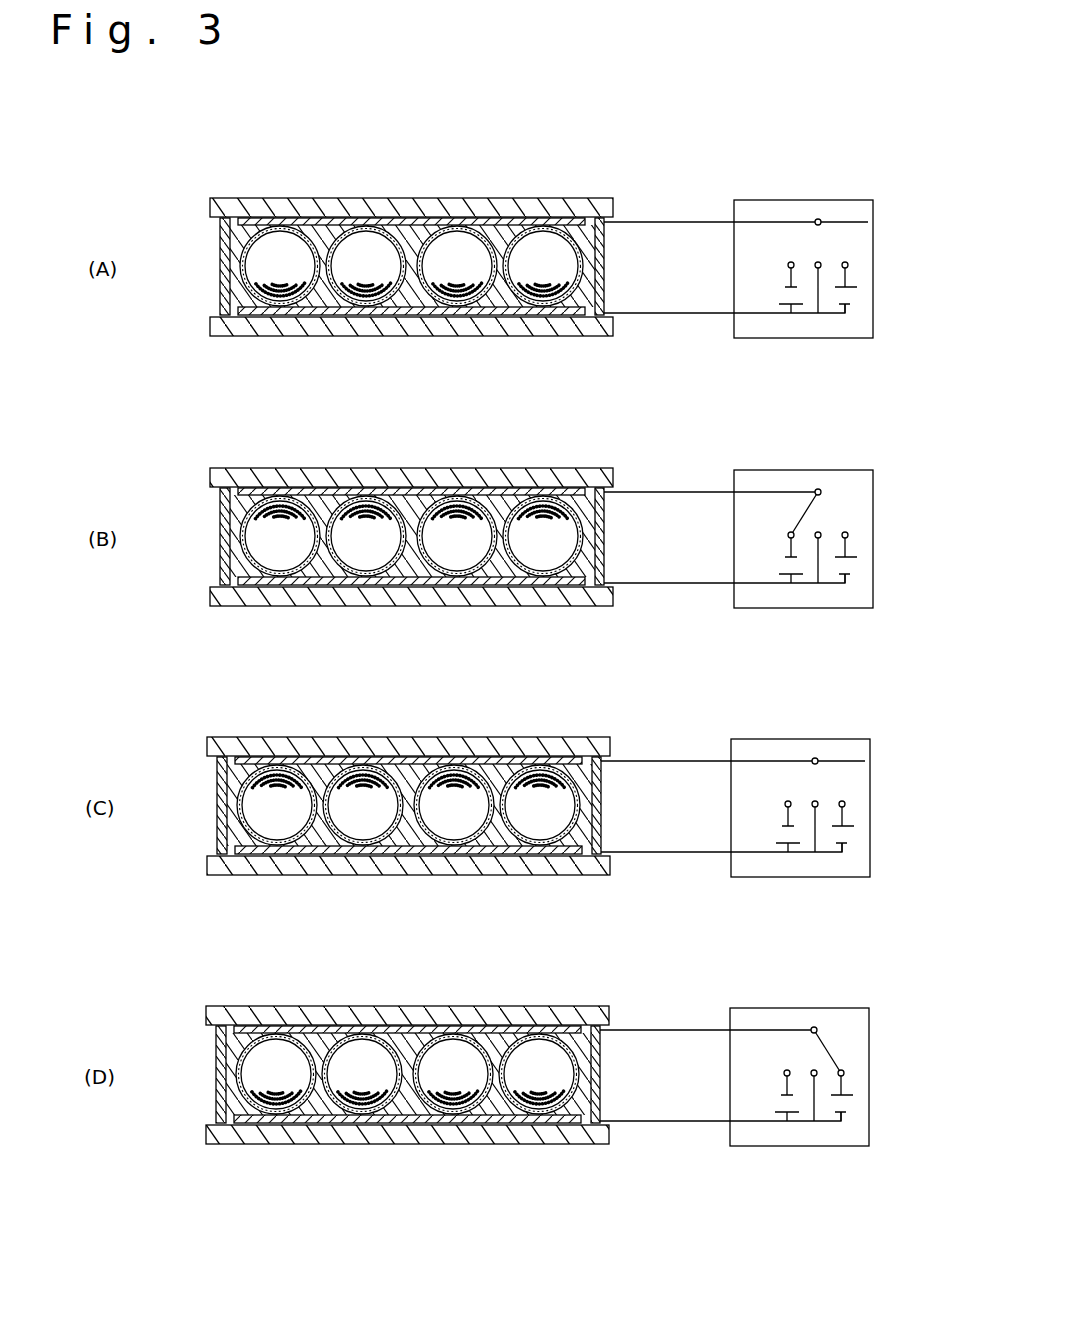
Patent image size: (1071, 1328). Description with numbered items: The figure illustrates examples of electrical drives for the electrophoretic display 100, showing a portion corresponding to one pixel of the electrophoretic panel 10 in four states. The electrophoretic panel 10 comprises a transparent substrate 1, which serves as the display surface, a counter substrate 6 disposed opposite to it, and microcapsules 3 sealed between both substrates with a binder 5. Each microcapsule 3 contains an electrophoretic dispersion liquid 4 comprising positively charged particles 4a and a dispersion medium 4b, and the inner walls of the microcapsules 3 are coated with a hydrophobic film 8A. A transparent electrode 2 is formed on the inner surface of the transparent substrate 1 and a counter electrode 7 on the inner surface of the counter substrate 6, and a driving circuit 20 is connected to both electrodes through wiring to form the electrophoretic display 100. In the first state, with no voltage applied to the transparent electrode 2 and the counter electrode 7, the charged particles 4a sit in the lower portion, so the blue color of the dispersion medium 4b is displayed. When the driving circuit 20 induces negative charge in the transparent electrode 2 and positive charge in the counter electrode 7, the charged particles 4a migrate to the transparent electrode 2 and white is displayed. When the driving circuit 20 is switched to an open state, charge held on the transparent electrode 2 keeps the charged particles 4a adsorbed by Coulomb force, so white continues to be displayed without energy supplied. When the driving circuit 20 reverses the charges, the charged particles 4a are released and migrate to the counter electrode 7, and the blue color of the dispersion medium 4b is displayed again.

The transparent substrate 1 is at (253, 199).
The transparent electrode 2 is at (318, 221).
The microcapsules 3 is at (229, 278).
The electrophoretic dispersion liquid 4 is at (174, 210).
The charged particles 4a is at (267, 283).
The dispersion medium 4b is at (270, 248).
The binder 5 is at (237, 302).
The counter substrate 6 is at (328, 328).
The counter electrode 7 is at (268, 320).
The hydrophobic film 8A is at (569, 297).
The electrophoretic panel 10 is at (391, 192).
The driving circuit 20 is at (825, 193).
The electrophoretic display 100 is at (685, 185).